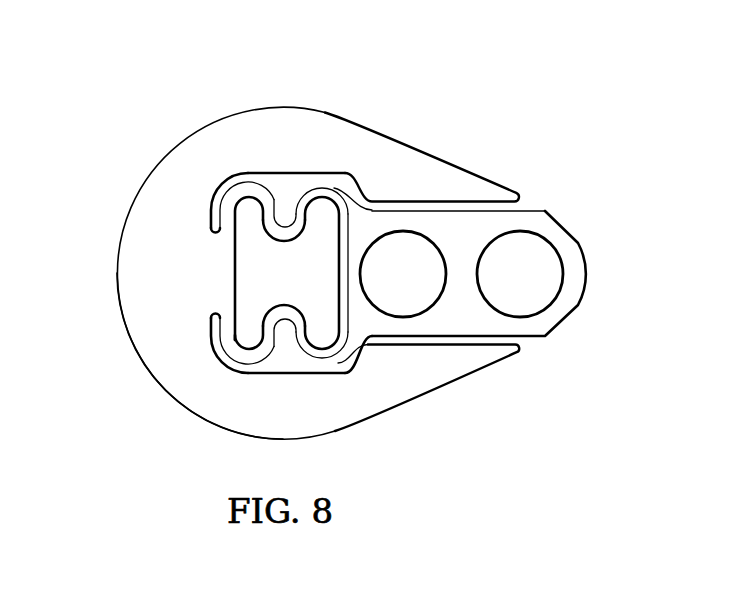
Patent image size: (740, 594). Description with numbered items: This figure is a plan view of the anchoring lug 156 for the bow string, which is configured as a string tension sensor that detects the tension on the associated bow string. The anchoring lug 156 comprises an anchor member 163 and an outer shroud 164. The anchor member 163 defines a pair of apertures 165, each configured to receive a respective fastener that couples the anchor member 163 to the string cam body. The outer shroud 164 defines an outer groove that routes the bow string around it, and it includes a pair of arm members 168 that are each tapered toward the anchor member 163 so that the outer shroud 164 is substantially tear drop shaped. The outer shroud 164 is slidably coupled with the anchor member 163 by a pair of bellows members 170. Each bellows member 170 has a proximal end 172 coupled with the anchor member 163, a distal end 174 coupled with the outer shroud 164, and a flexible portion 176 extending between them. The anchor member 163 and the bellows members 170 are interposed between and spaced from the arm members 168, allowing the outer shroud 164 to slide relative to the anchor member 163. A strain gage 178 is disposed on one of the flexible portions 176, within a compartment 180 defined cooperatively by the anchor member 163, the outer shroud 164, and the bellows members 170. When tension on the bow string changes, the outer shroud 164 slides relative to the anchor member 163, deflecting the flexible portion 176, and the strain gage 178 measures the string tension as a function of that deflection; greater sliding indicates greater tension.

The anchoring lug 156 is at (142, 77).
The anchor member 163 is at (562, 224).
The outer shroud 164 is at (191, 441).
The apertures 165 is at (512, 312).
The arm members 168 is at (458, 190).
The bellows members 170 is at (298, 185).
The proximal end 172 is at (335, 213).
The distal end 174 is at (228, 218).
The flexible portion 176 is at (289, 227).
The strain gage 178 is at (288, 243).
The compartment 180 is at (345, 182).